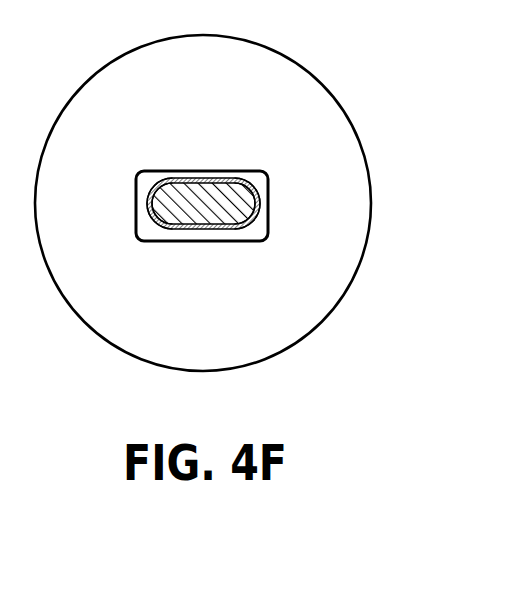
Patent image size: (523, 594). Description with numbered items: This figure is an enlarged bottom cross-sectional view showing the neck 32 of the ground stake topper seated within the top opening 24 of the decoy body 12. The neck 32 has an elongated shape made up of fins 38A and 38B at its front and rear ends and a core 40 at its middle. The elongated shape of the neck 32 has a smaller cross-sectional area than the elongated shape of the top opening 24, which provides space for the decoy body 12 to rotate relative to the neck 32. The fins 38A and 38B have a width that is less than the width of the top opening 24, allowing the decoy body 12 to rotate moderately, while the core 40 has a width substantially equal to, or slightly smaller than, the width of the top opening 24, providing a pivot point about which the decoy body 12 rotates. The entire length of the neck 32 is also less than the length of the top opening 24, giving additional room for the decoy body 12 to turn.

The decoy body 12 is at (313, 289).
The top opening 24 is at (156, 168).
The neck 32 is at (181, 158).
The core 40 is at (230, 176).
The fin 38A is at (150, 215).
The fin 38B is at (258, 203).